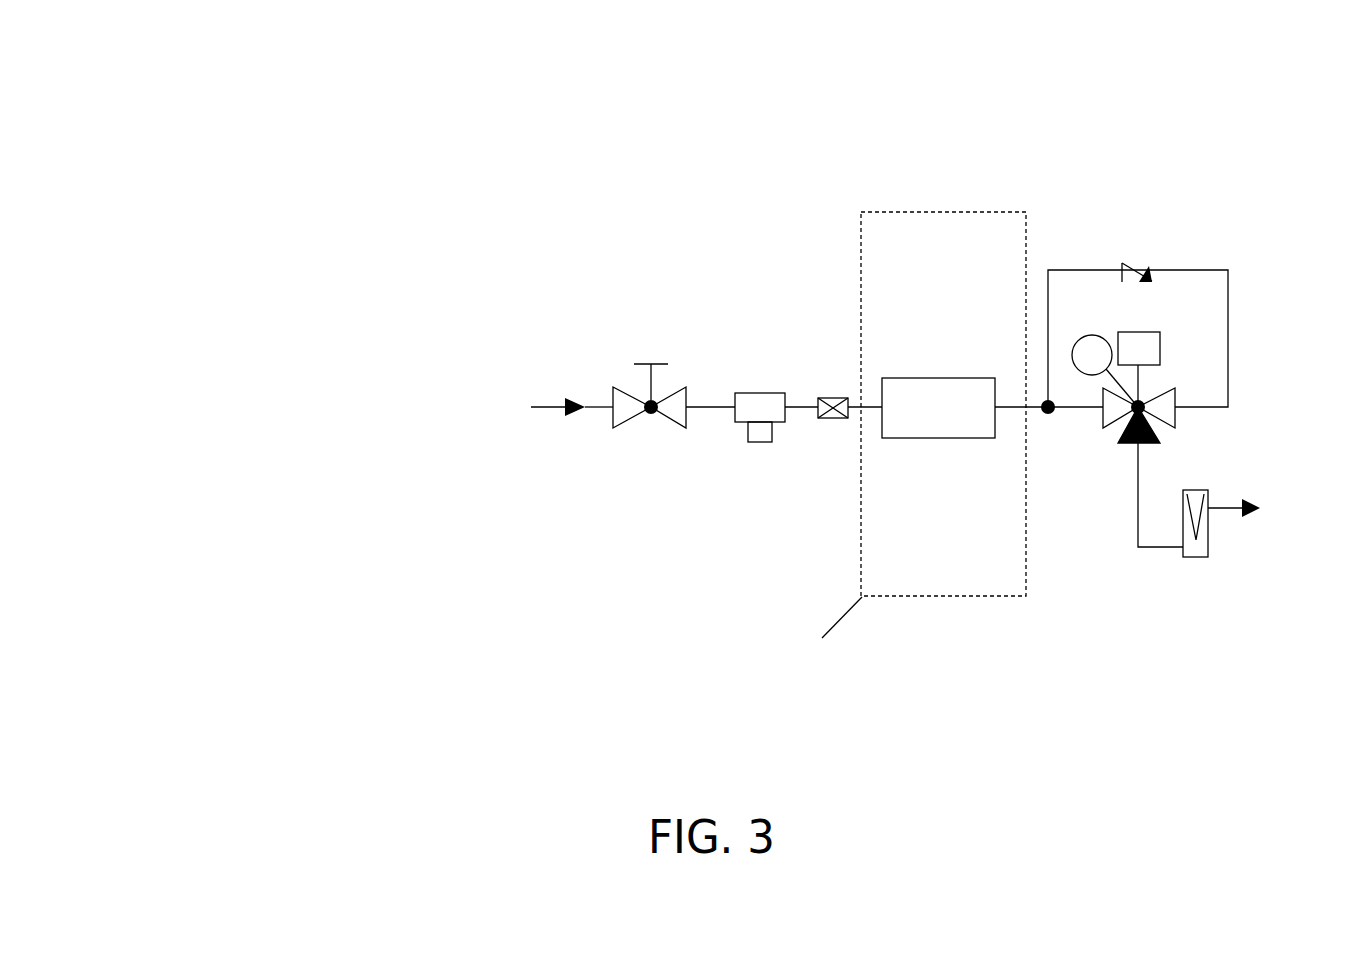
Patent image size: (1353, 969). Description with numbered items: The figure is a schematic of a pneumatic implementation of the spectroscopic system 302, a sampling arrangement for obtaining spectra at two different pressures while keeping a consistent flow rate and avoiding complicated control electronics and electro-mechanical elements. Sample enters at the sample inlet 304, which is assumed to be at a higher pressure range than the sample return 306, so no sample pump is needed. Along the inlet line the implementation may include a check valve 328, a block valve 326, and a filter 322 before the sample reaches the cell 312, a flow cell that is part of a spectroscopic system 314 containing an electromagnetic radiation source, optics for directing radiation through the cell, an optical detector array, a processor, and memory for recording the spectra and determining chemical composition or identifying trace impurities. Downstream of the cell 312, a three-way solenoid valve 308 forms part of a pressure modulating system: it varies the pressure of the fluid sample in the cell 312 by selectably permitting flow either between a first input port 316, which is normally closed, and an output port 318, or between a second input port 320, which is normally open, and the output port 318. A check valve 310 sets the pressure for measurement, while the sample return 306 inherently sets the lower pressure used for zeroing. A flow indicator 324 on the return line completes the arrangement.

The spectroscopic system 302 is at (718, 141).
The sample inlet 304 is at (462, 390).
The sample return 306 is at (1297, 472).
The 3-way solenoid valve 308 is at (1108, 451).
The check valve 310 is at (1165, 260).
The cell 312 is at (928, 373).
The spectroscopic system 314 is at (945, 210).
The first input port 316 is at (1102, 413).
The output port 318 is at (1157, 443).
The second input port 320 is at (1173, 417).
The filter 322 is at (767, 373).
The flow indicator 324 is at (1210, 540).
The block valve 326 is at (687, 382).
The check valve 328 is at (568, 392).